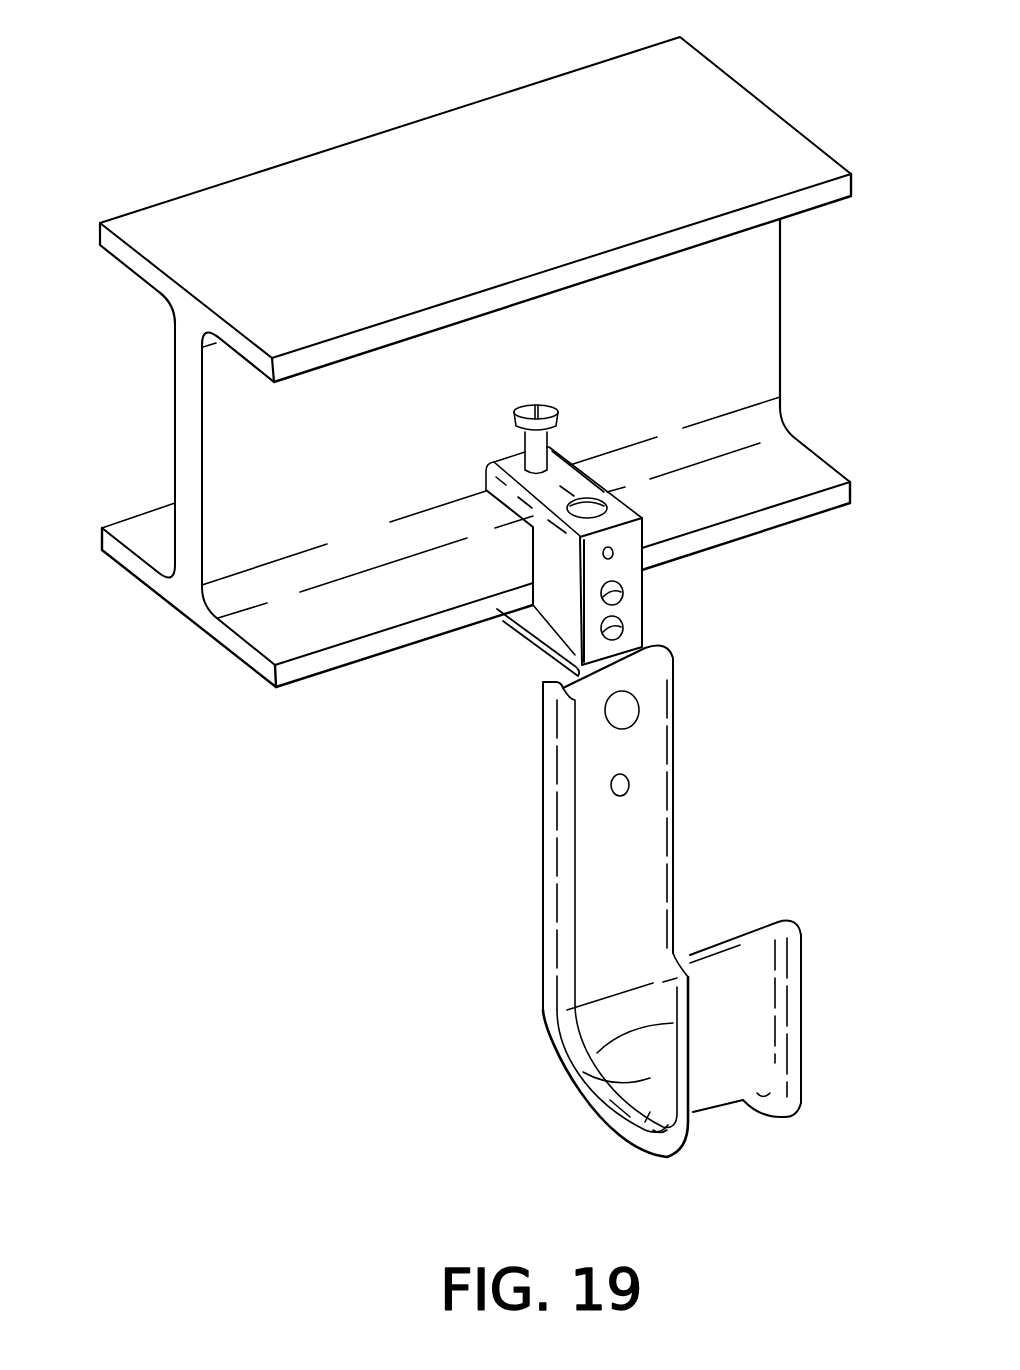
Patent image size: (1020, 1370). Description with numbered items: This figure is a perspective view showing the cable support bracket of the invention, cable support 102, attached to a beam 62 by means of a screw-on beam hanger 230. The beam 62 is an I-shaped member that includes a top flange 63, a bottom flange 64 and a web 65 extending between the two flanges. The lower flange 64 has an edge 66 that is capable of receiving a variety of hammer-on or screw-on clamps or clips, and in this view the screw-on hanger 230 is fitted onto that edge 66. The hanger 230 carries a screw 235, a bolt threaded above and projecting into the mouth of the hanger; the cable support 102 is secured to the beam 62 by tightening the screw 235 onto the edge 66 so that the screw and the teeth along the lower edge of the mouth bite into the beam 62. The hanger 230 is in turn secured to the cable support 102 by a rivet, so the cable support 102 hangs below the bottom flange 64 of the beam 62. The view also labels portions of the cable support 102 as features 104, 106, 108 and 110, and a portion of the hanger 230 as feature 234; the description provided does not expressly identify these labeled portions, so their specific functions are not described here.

The beam 62 is at (784, 52).
The top flange 63 is at (775, 145).
The bottom flange 64 is at (275, 633).
The web 65 is at (230, 450).
The edge 66 is at (310, 670).
The cable support 102 is at (491, 873).
The vertical stem of hanger 104 is at (648, 848).
The curved bottom portion of hanger 106 is at (541, 1098).
The retaining tab of hanger 108 is at (748, 968).
The inner cable-supporting surface 110 is at (610, 1097).
The screw-on beam hanger 230 is at (678, 607).
The mounting plate of beam clamp 234 is at (590, 612).
The screw 235 is at (549, 403).